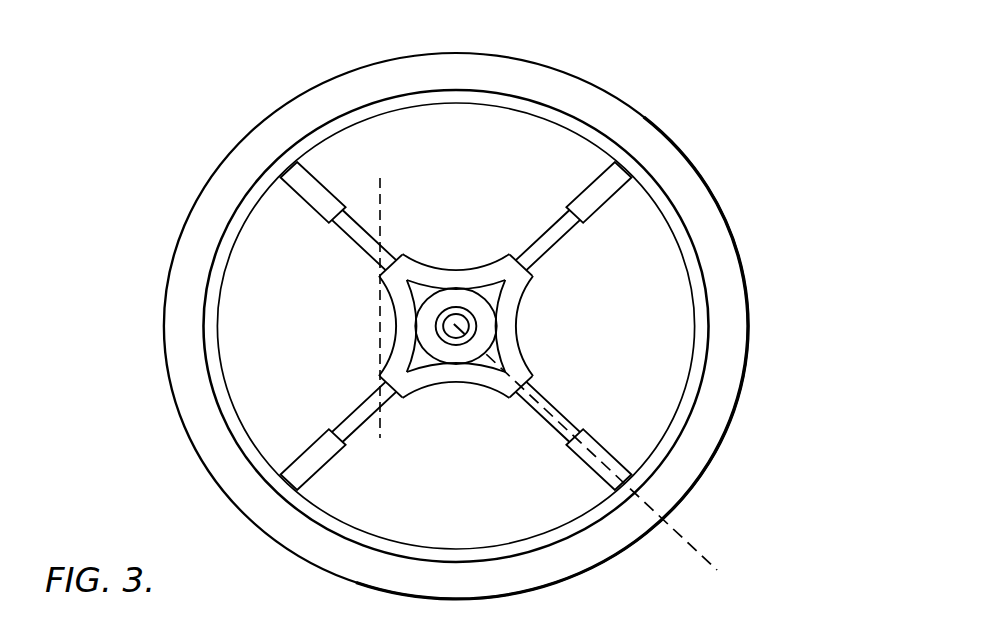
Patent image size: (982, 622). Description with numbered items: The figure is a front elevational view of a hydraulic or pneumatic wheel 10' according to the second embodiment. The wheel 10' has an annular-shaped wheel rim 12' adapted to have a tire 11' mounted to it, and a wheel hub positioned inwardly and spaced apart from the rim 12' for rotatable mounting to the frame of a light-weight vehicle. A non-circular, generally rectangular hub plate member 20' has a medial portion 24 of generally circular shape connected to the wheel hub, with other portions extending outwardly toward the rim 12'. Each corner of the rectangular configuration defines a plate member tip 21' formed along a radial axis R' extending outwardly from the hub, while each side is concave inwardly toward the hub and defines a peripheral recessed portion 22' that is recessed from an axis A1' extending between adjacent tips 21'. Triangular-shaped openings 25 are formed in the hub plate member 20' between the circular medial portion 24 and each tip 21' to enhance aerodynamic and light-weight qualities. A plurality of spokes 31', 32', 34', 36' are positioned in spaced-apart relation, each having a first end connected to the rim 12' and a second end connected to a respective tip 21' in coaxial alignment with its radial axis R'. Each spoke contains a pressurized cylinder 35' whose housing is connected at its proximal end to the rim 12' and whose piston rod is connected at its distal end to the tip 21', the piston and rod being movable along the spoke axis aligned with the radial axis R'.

The wheel 10' is at (604, 312).
The tire 11' is at (456, 311).
The wheel rim 12' is at (455, 300).
The hub plate member 20' is at (584, 406).
The plate member tips 21' is at (486, 314).
The peripheral recessed portions 22' is at (429, 327).
The medial portion 24 is at (419, 322).
The triangular-shaped openings 25 is at (423, 287).
The spoke 31' is at (331, 216).
The spoke 32' is at (339, 440).
The spoke 34' is at (611, 444).
The pressurized cylinder 35' is at (522, 482).
The spoke 36' is at (574, 211).
The axis A1' is at (398, 293).
The radial axis R' is at (615, 472).